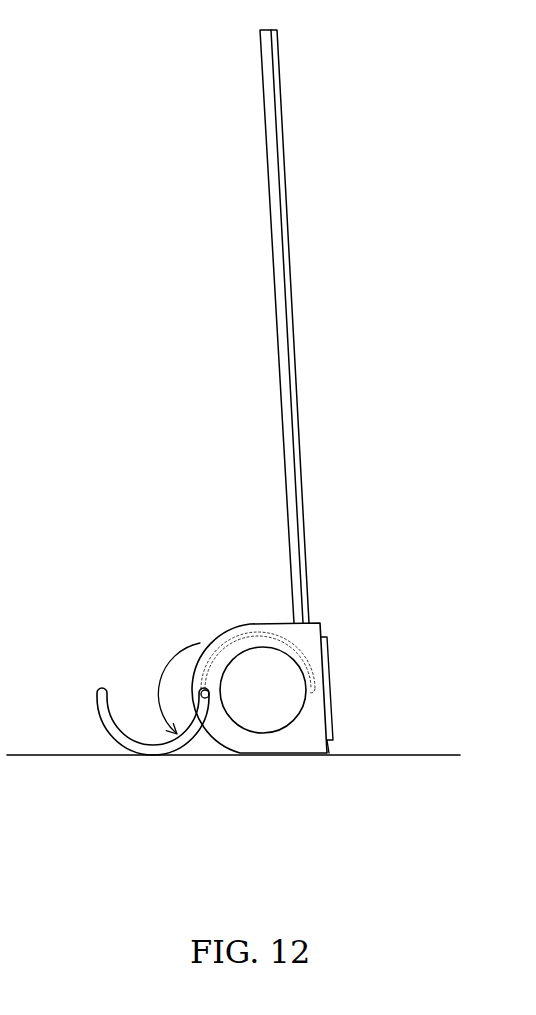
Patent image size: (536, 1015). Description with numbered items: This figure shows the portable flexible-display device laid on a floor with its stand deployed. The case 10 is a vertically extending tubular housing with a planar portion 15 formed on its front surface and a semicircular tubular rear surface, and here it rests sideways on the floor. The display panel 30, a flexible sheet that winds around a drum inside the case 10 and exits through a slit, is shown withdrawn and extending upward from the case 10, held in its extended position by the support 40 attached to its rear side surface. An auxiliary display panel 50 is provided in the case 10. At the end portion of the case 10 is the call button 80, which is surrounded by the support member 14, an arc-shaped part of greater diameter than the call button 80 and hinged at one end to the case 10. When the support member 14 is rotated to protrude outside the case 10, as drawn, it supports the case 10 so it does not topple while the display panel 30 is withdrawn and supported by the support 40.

The case 10 is at (297, 755).
The support member 14 is at (100, 693).
The planar portion 15 is at (332, 718).
The display panel 30 is at (287, 233).
The support 40 is at (272, 258).
The auxiliary display panel 50 is at (332, 650).
The call button 80 is at (238, 730).